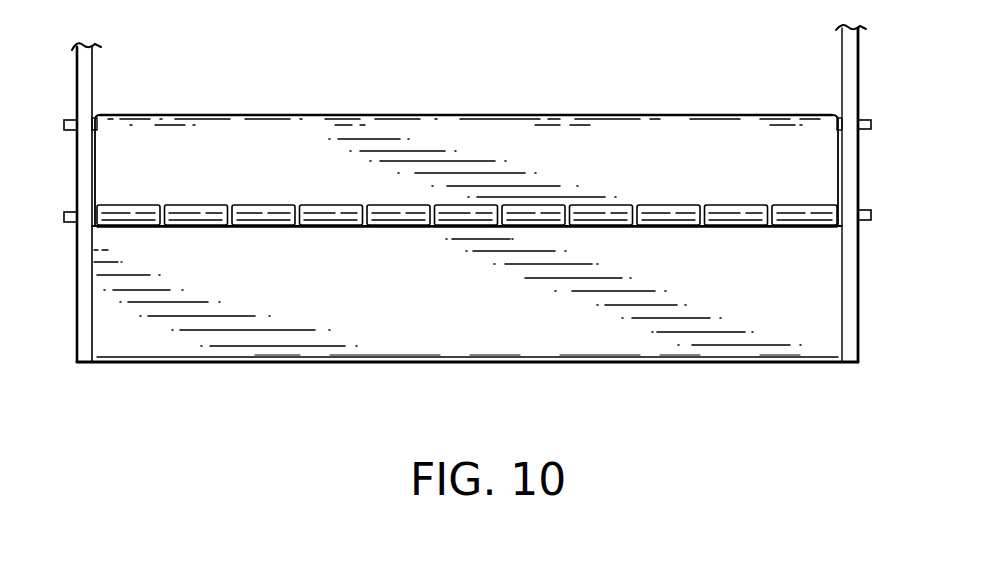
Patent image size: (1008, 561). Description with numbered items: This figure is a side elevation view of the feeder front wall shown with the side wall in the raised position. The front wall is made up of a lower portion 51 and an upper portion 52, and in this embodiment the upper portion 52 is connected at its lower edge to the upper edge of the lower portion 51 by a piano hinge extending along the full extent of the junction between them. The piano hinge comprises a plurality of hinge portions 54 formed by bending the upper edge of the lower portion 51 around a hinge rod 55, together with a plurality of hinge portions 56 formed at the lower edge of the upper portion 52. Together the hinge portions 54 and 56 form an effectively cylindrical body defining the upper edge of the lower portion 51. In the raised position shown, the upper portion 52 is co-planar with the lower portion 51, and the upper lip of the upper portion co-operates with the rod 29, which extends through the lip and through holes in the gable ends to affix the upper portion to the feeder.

The rod 29 is at (868, 120).
The lower portion 51 is at (562, 334).
The upper portion 52 is at (580, 127).
The hinge portions 54 is at (192, 232).
The hinge rod 55 is at (872, 212).
The hinge portions 56 is at (128, 205).